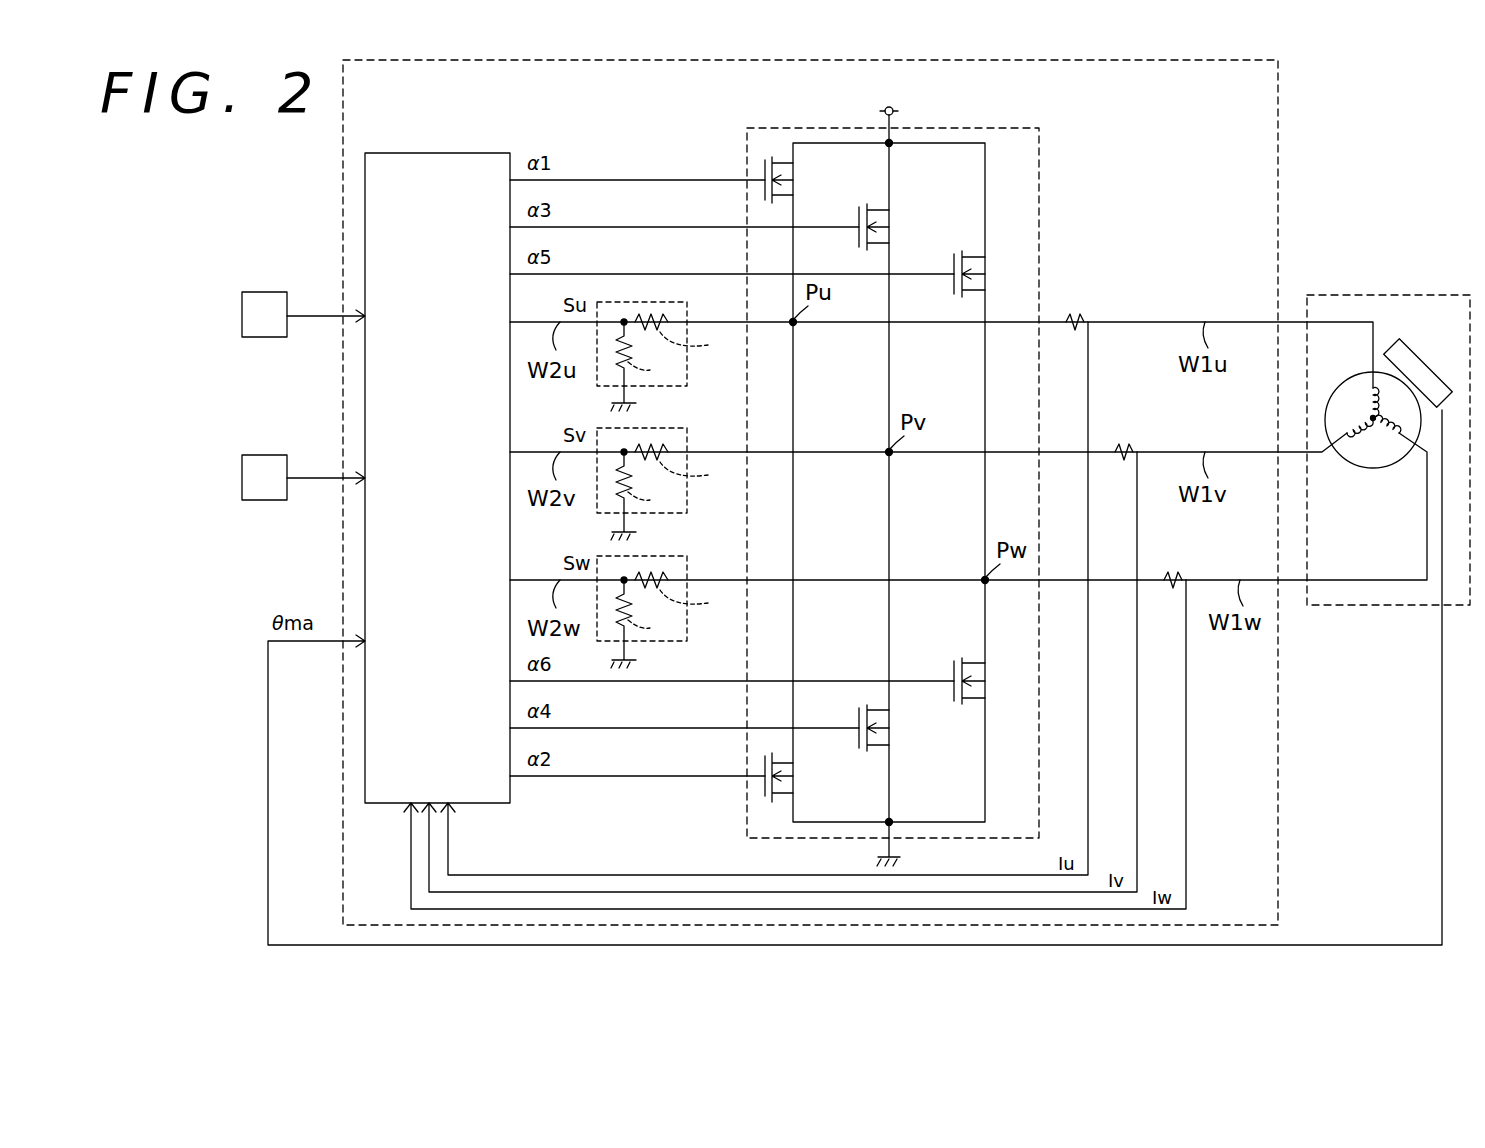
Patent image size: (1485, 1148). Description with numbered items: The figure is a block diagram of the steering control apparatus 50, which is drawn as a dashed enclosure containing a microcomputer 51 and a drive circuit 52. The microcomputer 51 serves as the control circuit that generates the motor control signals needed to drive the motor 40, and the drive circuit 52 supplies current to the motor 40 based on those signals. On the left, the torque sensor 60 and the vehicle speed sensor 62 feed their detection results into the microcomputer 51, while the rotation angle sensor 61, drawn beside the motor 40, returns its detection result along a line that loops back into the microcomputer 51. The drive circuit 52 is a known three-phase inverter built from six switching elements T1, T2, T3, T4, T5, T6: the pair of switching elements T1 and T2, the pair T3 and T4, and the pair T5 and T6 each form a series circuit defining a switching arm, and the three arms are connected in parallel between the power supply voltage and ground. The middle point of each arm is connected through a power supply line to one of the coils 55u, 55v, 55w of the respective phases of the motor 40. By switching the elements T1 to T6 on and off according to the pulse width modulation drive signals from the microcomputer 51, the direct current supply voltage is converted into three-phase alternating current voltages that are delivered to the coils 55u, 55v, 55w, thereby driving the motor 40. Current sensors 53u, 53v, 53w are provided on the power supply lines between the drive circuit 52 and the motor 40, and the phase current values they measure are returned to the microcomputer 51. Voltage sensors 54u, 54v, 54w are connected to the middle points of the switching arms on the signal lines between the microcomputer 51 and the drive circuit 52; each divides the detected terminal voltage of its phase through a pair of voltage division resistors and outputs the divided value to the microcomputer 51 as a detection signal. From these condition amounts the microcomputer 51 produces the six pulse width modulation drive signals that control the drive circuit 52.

The motor 40 is at (1315, 434).
The steering control apparatus 50 is at (1278, 80).
The microcomputer 51 is at (438, 152).
The drive circuit 52 is at (1039, 165).
The current sensor 53u is at (1078, 310).
The current sensor 53v is at (1126, 442).
The current sensor 53w is at (1174, 570).
The voltage sensor 54u is at (655, 392).
The voltage sensor 54v is at (655, 520).
The voltage sensor 54w is at (655, 648).
The coil 55u is at (1365, 393).
The coil 55v is at (1347, 440).
The coil 55w is at (1390, 445).
The torque sensor 60 is at (265, 291).
The rotation angle sensor 61 is at (1434, 372).
The vehicle speed sensor 62 is at (265, 454).
The switching element T1 is at (760, 162).
The switching element T2 is at (760, 762).
The switching element T3 is at (856, 218).
The switching element T4 is at (856, 720).
The switching element T5 is at (951, 265).
The switching element T6 is at (951, 672).